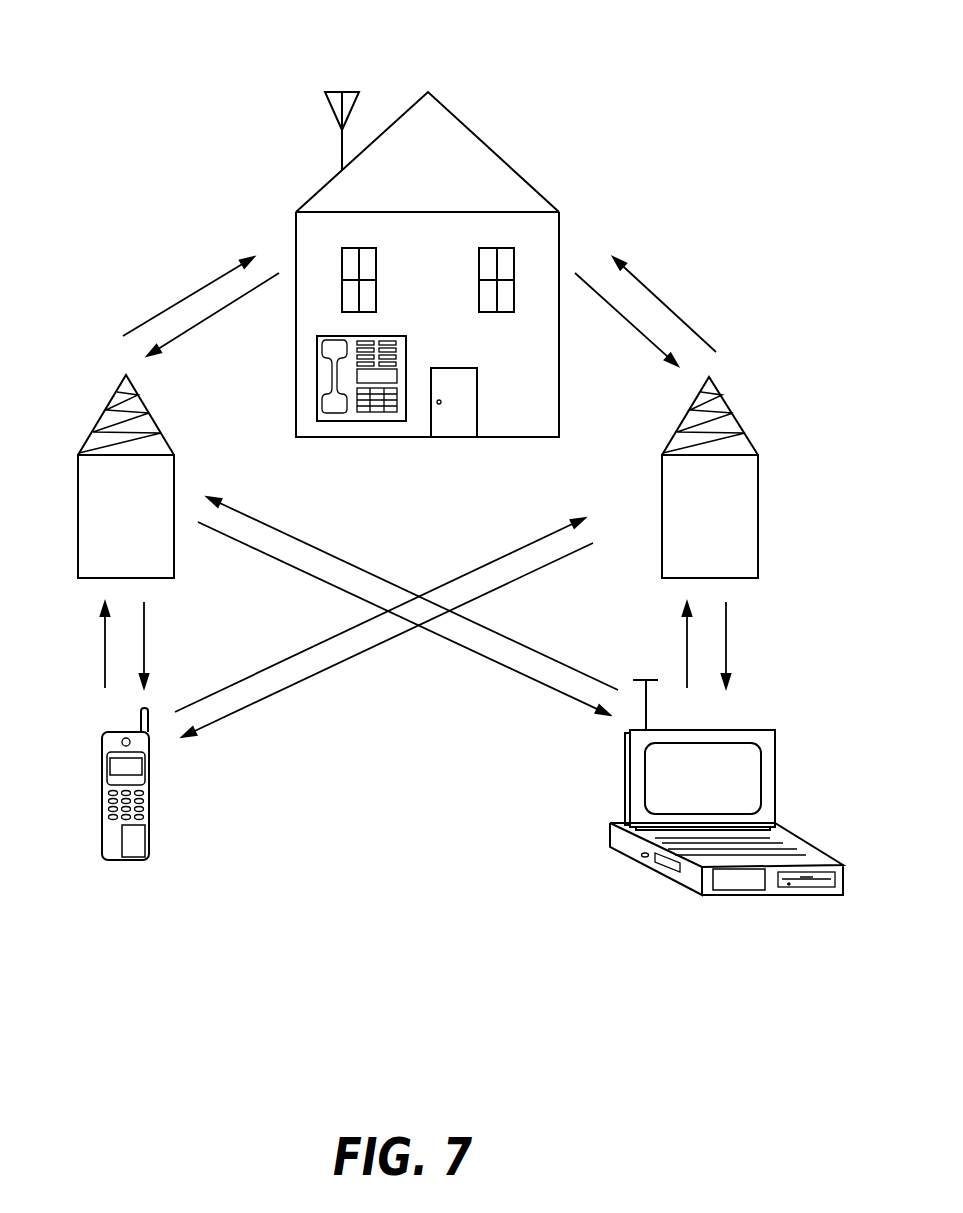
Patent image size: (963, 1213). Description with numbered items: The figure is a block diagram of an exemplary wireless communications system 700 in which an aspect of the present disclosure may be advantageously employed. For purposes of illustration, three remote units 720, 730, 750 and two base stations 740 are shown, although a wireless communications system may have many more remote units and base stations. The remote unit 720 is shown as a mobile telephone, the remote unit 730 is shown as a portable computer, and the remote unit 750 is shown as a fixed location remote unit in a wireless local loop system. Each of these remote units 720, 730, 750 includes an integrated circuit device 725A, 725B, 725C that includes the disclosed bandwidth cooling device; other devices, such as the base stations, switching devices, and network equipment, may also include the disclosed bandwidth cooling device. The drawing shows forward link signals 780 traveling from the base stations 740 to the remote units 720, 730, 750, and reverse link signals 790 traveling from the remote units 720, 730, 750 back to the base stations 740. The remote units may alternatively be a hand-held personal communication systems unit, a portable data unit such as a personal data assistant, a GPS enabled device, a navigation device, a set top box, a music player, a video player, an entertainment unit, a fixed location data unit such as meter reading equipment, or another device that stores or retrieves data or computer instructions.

The wireless communications system 700 is at (144, 66).
The remote unit 720 is at (103, 742).
The integrated circuit device 725A is at (133, 850).
The integrated circuit device 725B is at (392, 376).
The integrated circuit device 725C is at (740, 881).
The remote unit 730 is at (745, 728).
The base station 740 is at (100, 413).
The remote unit 750 is at (317, 376).
The forward link signals 780 is at (193, 292).
The reverse link signals 790 is at (217, 312).